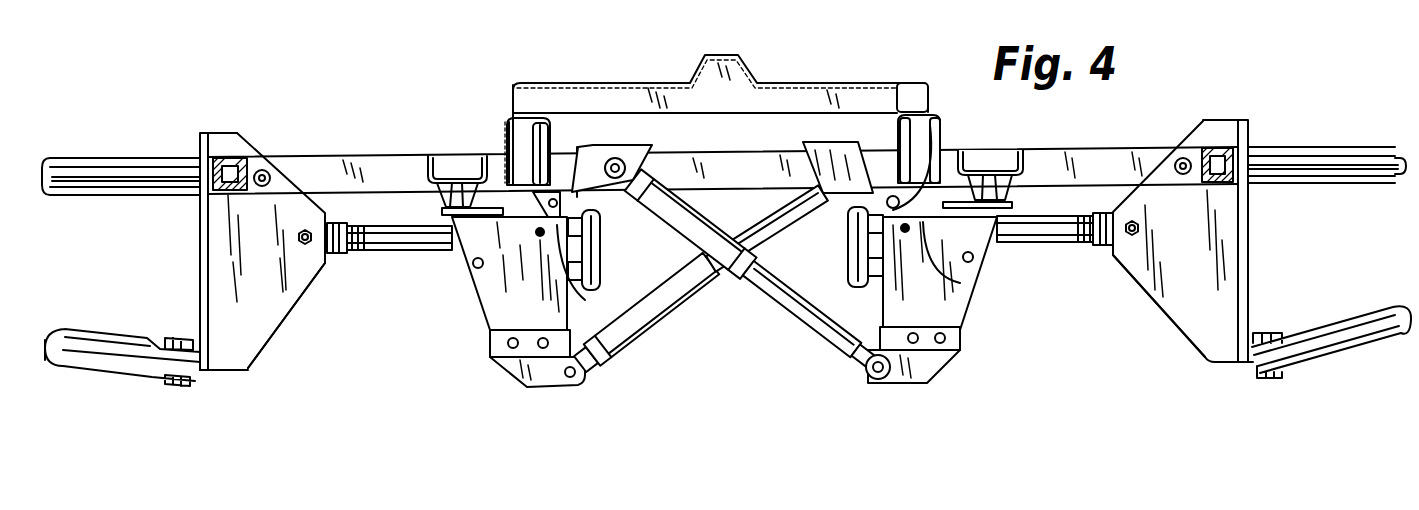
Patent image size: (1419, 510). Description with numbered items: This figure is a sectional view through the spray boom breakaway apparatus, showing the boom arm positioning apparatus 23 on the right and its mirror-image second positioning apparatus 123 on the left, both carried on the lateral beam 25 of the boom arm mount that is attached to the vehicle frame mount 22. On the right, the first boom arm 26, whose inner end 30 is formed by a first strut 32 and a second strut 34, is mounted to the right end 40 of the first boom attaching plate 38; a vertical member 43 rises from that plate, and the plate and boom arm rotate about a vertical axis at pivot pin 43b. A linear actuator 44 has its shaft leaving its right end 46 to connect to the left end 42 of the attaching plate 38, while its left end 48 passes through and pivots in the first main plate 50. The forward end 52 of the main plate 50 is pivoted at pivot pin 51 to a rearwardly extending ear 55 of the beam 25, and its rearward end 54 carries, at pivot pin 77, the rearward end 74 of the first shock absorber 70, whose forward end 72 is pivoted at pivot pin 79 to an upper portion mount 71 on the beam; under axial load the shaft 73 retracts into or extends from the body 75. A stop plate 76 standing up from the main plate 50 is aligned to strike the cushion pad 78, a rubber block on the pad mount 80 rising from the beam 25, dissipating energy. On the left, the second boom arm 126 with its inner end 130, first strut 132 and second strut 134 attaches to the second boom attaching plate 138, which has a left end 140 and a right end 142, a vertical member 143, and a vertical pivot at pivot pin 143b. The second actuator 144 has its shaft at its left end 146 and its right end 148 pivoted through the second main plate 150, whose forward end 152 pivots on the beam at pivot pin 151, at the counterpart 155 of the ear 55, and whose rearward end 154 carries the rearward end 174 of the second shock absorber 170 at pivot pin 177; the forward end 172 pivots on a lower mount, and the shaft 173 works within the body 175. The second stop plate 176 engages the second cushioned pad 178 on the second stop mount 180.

The vehicle frame mount 22 is at (772, 100).
The boom arm positioning apparatus 23 is at (757, 297).
The lateral beam 25 is at (342, 170).
The first boom arm 26 is at (1233, 372).
The inner end 30 is at (1290, 157).
The first strut 32 is at (1396, 160).
The second strut 34 is at (1393, 312).
The first boom attaching plate 38 is at (1182, 308).
The right end 40 is at (1247, 257).
The left end 42 is at (1120, 250).
The vertical member 43 is at (1205, 147).
The pivot pin 43b is at (1183, 157).
The linear actuator 44 is at (1055, 266).
The right end 46 is at (1100, 246).
The left end 48 is at (862, 239).
The first main plate 50 is at (911, 283).
The pivot pin 51 is at (943, 172).
The forward end 52 is at (960, 283).
The rearward end 54 is at (920, 378).
The rearwardly extending ear 55 is at (900, 92).
The first shock absorber 70 is at (757, 297).
The upper portion mount 71 is at (626, 157).
The forward end 72 is at (645, 190).
The shaft 73 is at (820, 315).
The rearward end 74 is at (850, 370).
The body 75 is at (684, 198).
The stop plate 76 is at (1012, 206).
The pivot pin 77 is at (874, 386).
The cushion pad 78 is at (998, 186).
The pivot pin 79 is at (613, 158).
The pad mount 80 is at (975, 172).
The second spray boom positioning apparatus 123 is at (701, 311).
The second boom arm 126 is at (195, 395).
The inner end 130 is at (122, 163).
The first strut 132 is at (50, 164).
The second strut 134 is at (57, 330).
The second boom attaching plate 138 is at (244, 350).
The left end 140 is at (198, 236).
The right end 142 is at (320, 272).
The vertical member 143 is at (232, 158).
The pivot pin 143b is at (268, 170).
The second actuator 144 is at (384, 275).
The left end 146 is at (340, 254).
The right end 148 is at (582, 230).
The second main plate 150 is at (544, 230).
The pivot pin 151 is at (548, 100).
The forward end 152 is at (583, 293).
The rearward end 154 is at (555, 375).
The strip 155 is at (500, 157).
The second shock absorber 170 is at (701, 307).
The forward end 172 is at (803, 203).
The shaft 173 is at (772, 222).
The rearward end 174 is at (608, 360).
The body 175 is at (664, 279).
The second stop plate 176 is at (440, 212).
The pivot pin 177 is at (568, 380).
The second cushioned pad 178 is at (457, 200).
The second stop mount 180 is at (447, 182).